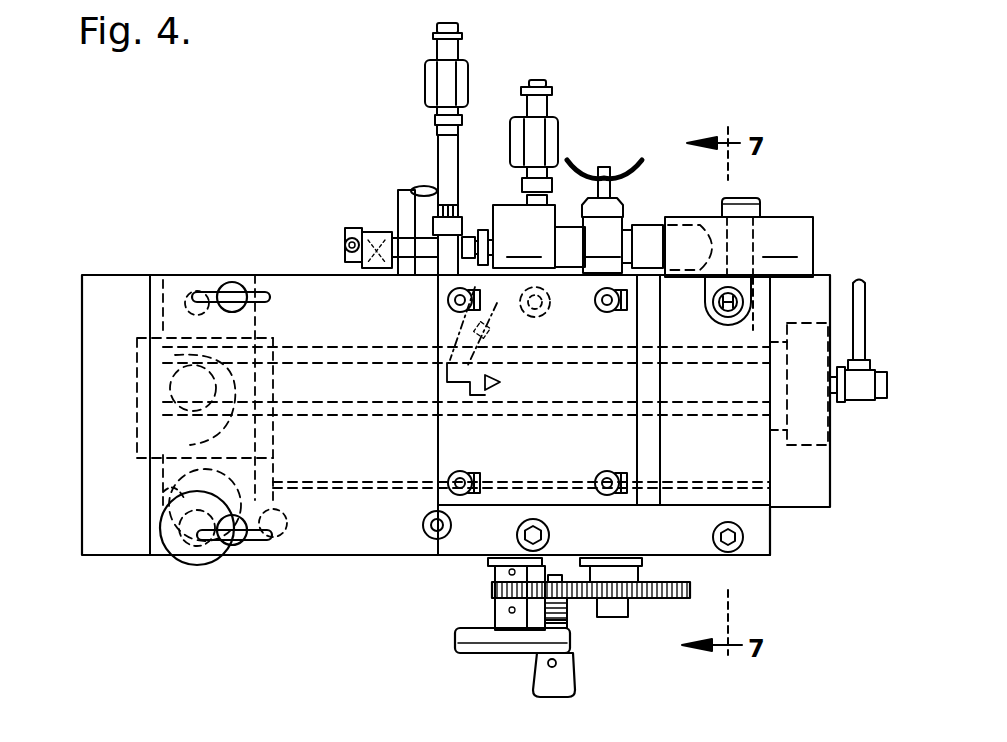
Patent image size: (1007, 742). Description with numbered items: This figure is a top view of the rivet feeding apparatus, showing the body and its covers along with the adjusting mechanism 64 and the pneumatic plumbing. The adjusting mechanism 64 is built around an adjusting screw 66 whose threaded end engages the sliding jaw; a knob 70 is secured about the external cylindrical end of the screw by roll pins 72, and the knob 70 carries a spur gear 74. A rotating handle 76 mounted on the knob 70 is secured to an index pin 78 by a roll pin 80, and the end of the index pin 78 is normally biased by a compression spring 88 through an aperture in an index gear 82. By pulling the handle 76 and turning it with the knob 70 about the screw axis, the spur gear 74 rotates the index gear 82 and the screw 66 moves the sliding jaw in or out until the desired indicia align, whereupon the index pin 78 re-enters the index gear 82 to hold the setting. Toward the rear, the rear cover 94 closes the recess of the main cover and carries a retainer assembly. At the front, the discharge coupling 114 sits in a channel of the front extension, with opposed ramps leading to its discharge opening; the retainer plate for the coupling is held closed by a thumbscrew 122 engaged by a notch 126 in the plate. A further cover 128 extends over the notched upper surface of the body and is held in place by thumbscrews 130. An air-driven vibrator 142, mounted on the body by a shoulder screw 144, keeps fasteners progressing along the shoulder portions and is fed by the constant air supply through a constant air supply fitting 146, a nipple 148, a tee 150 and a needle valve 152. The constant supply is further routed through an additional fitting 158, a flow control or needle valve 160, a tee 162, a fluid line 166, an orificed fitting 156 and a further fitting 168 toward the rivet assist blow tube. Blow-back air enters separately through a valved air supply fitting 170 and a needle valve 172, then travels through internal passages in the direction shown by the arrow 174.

The adjusting mechanism 64 is at (496, 614).
The adjusting screw 66 is at (488, 560).
The knob 70 is at (455, 640).
The roll pins 72 is at (508, 610).
The spur gear 74 is at (492, 588).
The rotating handle 76 is at (540, 680).
The index pin 78 is at (567, 612).
The roll pin 80 is at (548, 667).
The index gear 82 is at (668, 600).
The compression spring 88 is at (567, 624).
The rear cover 94 is at (825, 492).
The discharge coupling 114 is at (150, 320).
The thumbscrew 122 is at (177, 573).
The notch 126 is at (150, 525).
The further cover 128 is at (337, 548).
The thumbscrews 130 is at (225, 283).
The air-driven vibrator 142 is at (739, 247).
The shoulder screw 144 is at (760, 205).
The constant air supply fitting 146 is at (558, 102).
The nipple 148 is at (545, 185).
The tee 150 is at (539, 231).
The needle valve 152 is at (615, 216).
The orificed fitting 156 is at (378, 232).
The additional fitting 158 is at (470, 238).
The flow control or needle valve 160 is at (405, 195).
The tee 162 is at (345, 250).
The fluid line 166 is at (345, 238).
The further fitting 168 is at (860, 400).
The valved air supply fitting 170 is at (425, 72).
The needle valve 172 is at (438, 148).
The arrow 174 is at (500, 397).